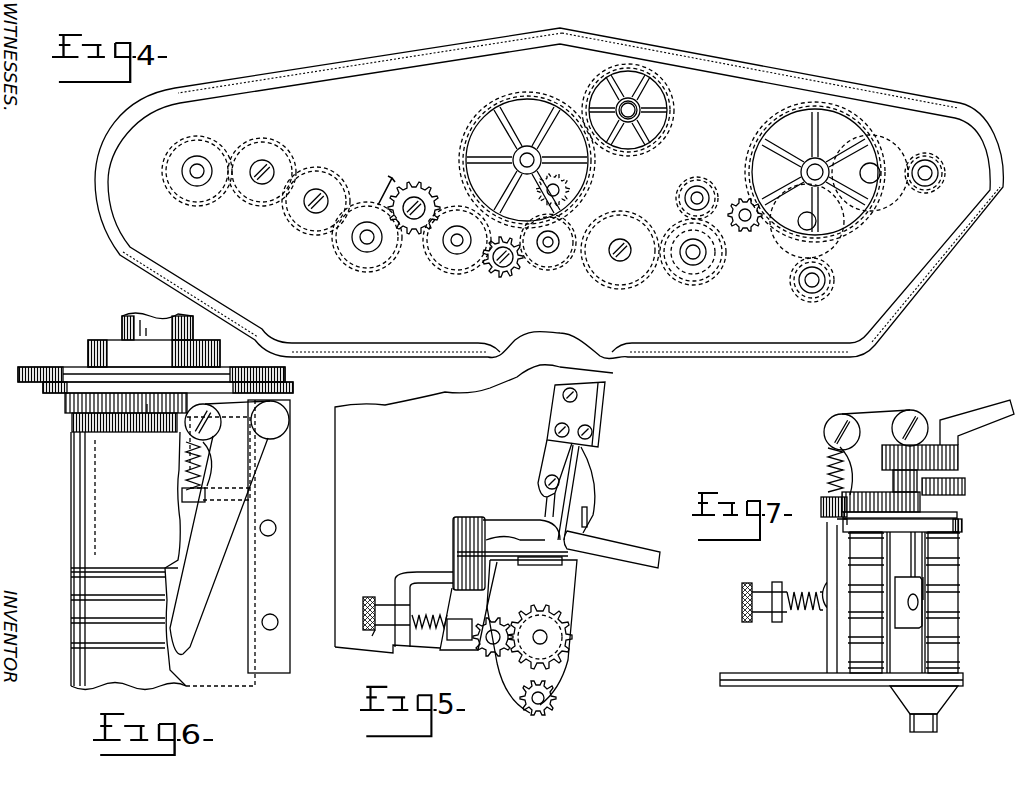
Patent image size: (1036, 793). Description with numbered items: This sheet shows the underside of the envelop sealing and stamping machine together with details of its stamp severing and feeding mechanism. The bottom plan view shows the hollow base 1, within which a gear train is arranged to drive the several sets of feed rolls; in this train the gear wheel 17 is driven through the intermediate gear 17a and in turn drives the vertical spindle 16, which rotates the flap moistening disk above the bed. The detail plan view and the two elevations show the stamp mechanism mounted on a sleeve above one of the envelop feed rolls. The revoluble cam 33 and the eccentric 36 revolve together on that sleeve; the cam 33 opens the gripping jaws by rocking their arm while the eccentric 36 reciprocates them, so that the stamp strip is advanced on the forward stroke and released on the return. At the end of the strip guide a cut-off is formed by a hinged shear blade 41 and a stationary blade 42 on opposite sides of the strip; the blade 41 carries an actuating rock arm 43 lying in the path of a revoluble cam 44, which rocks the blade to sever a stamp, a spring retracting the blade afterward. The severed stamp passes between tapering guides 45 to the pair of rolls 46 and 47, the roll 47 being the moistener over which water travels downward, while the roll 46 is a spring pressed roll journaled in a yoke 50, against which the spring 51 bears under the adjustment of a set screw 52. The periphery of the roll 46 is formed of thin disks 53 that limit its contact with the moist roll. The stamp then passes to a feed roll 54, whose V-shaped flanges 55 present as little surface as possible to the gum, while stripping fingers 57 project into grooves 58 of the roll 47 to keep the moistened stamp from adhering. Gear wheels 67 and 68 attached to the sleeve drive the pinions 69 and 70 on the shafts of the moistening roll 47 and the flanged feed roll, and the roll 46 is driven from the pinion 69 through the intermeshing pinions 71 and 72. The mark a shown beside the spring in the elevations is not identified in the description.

In FIG. 4, the base 1 is at (117, 255).
In FIG. 4, the vertical spindle 16 is at (640, 102).
In FIG. 4, the gear wheel 17 is at (663, 126).
In FIG. 4, the intermediate gear 17a is at (592, 178).
In FIG. 6, the revoluble cam 33 is at (36, 366).
In FIG. 6, the eccentric 36 is at (96, 340).
In FIG. 6, the hinged shear blade 41 is at (196, 612).
In FIG. 6, the stationary blade 42 is at (285, 598).
In FIG. 6, the actuating rock arm 43 is at (240, 405).
In FIG. 5, the actuating rock arm 43 is at (456, 560).
In FIG. 7, the actuating rock arm 43 is at (868, 414).
In FIG. 6, the revoluble cam 44 is at (147, 414).
In FIG. 6, the tapering guides 45 is at (185, 463).
In FIG. 7, the tapering guides 45 is at (826, 466).
In FIG. 7, the spring pressed roll 46 is at (838, 678).
In FIG. 7, the moistening roll 47 is at (898, 666).
In FIG. 5, the yoke 50 is at (478, 628).
In FIG. 7, the yoke 50 is at (833, 557).
In FIG. 5, the spring 51 is at (432, 645).
In FIG. 7, the spring 51 is at (803, 614).
In FIG. 5, the set screw 52 is at (390, 600).
In FIG. 7, the set screw 52 is at (742, 612).
In FIG. 7, the thin disks 53 is at (845, 600).
In FIG. 7, the feed roll 54 is at (950, 571).
In FIG. 7, the V-shaped flanges 55 is at (957, 586).
In FIG. 7, the stripping fingers 57 is at (924, 556).
In FIG. 7, the grooves 58 is at (895, 577).
In FIG. 6, the gear wheel 67 is at (65, 404).
In FIG. 6, the gear wheel 68 is at (69, 433).
In FIG. 5, the pinion 69 is at (572, 640).
In FIG. 7, the pinion 69 is at (955, 455).
In FIG. 5, the pinion 70 is at (557, 702).
In FIG. 7, the pinion 70 is at (965, 488).
In FIG. 7, the pinion 71 is at (891, 475).
In FIG. 5, the pinion 72 is at (478, 650).
In FIG. 7, the pinion 72 is at (852, 492).
In FIG. 6, the hook a is at (187, 464).
In FIG. 7, the hook a is at (833, 470).